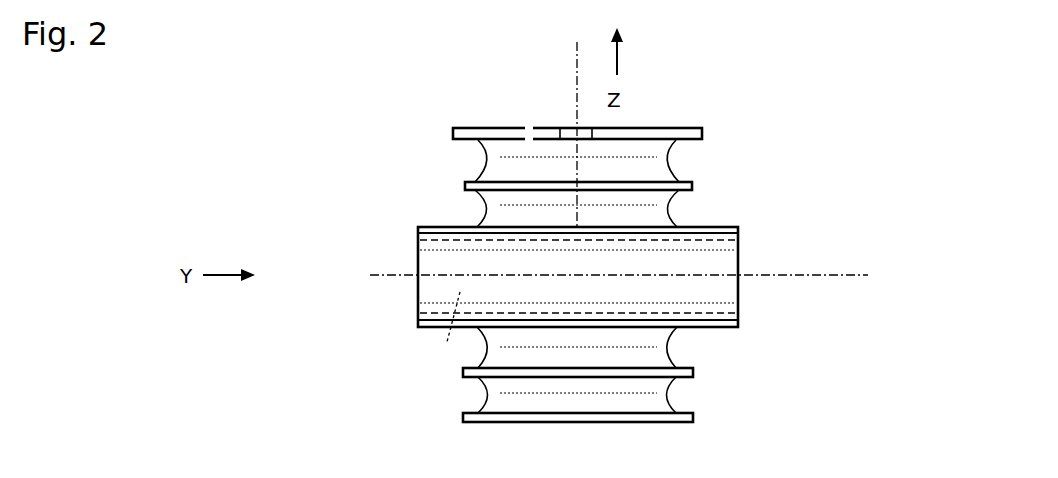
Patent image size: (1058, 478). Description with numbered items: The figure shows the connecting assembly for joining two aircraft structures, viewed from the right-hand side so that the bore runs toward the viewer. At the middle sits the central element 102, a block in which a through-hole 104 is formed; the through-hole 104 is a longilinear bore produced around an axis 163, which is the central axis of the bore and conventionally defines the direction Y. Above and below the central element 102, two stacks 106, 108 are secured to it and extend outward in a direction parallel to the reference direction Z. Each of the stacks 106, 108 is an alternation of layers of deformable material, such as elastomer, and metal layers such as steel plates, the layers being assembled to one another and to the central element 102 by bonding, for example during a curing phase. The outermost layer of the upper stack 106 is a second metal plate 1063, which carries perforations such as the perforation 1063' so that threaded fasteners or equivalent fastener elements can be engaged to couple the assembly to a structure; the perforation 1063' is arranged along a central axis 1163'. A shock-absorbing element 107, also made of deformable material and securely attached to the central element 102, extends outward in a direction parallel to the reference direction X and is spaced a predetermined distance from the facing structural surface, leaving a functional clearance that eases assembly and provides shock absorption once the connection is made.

The central element 102 is at (441, 228).
The through-hole 104 is at (418, 263).
The stack 106 is at (646, 138).
The shock-absorbing element 107 is at (447, 342).
The stack 108 is at (757, 328).
The axis of the bore 163 is at (868, 275).
The second metal plate 1063 is at (592, 94).
The perforation 1063' is at (506, 110).
The central axis 1163' is at (532, 94).